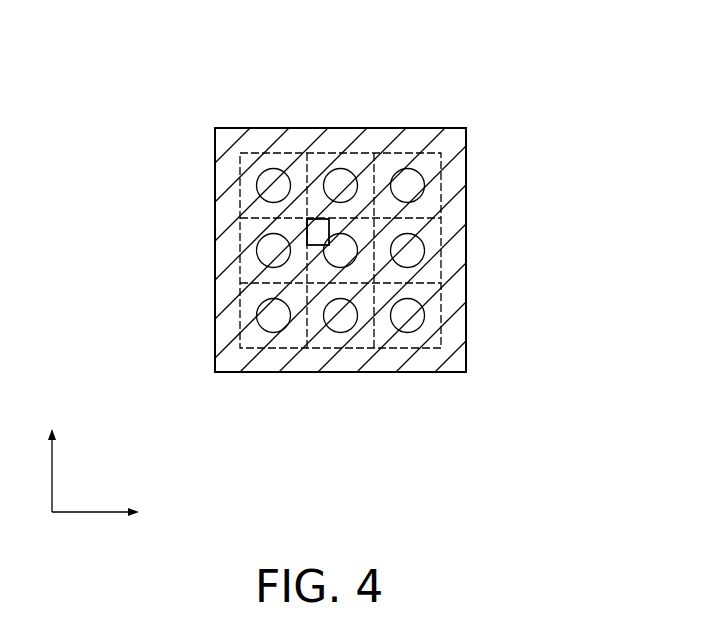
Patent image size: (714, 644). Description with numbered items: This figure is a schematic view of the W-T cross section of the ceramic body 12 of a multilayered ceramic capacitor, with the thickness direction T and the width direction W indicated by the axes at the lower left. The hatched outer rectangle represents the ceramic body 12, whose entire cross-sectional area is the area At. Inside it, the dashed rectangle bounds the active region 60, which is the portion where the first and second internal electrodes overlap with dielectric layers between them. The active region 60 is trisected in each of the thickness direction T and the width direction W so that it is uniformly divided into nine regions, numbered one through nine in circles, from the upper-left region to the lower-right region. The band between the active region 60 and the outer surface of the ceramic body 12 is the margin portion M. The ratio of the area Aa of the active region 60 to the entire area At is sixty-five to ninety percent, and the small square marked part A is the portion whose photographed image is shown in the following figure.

The ceramic body 12 is at (413, 128).
The entire area of the W-T cross section At is at (394, 214).
The active region 60 is at (456, 163).
The area of the active region Aa is at (467, 177).
The part A is at (307, 228).
The margin portion M is at (455, 307).
The thickness direction T is at (52, 455).
The width direction W is at (108, 515).